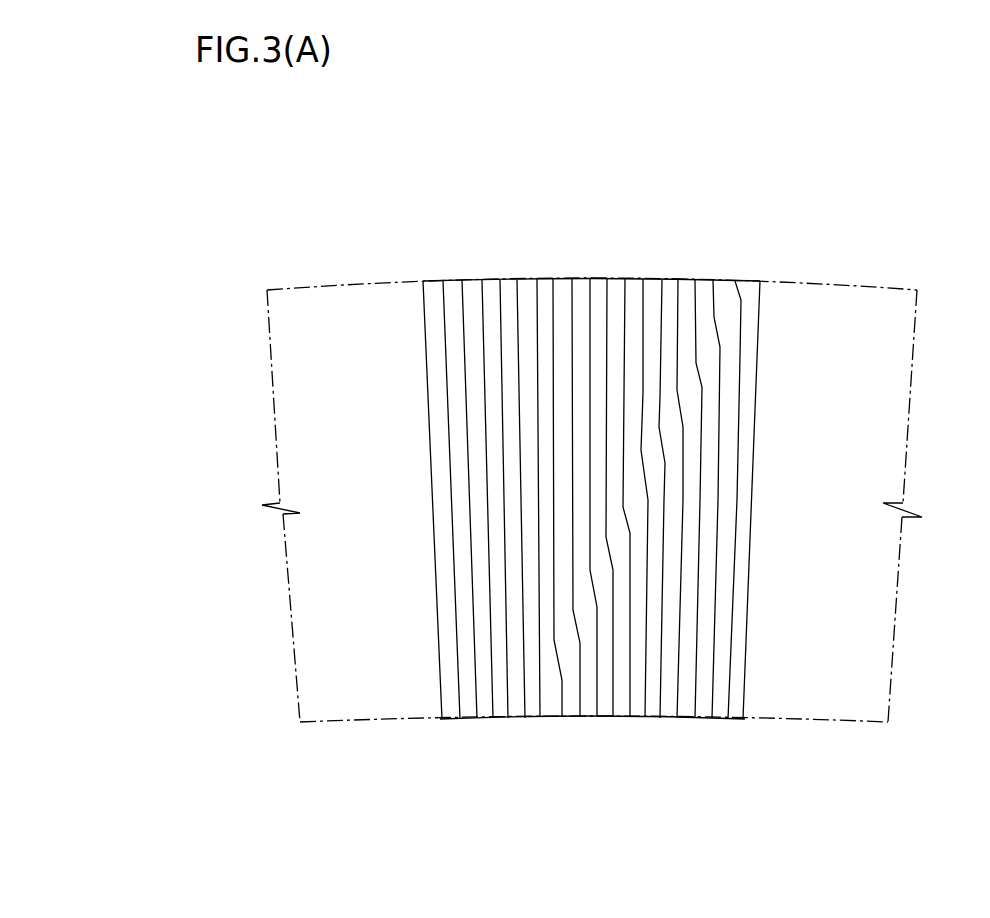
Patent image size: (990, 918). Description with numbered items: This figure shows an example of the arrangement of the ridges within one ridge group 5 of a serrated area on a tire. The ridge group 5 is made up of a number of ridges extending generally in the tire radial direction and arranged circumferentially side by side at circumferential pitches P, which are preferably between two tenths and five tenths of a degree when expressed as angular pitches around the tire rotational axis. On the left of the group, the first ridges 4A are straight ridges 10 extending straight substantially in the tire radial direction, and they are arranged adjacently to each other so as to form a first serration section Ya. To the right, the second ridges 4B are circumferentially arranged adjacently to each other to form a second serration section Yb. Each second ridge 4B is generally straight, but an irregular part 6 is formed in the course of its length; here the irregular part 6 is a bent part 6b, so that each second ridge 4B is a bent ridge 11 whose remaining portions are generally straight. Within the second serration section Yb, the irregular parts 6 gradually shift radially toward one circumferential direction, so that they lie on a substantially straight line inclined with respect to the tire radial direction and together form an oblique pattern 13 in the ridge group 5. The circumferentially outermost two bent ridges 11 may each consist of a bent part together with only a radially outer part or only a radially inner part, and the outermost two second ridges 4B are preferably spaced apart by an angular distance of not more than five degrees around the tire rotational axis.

The ridge group 5 is at (641, 448).
The first ridge 4A is at (447, 383).
The second ridge 4B is at (850, 454).
The irregular part 6 is at (787, 448).
The bent part 6b is at (722, 333).
The straight ridge 10 is at (450, 448).
The bent ridge 11 is at (722, 423).
The oblique pattern 13 is at (555, 660).
The first serration section Ya is at (517, 272).
The second serration section Yb is at (758, 235).
The circumferential pitch P is at (462, 720).